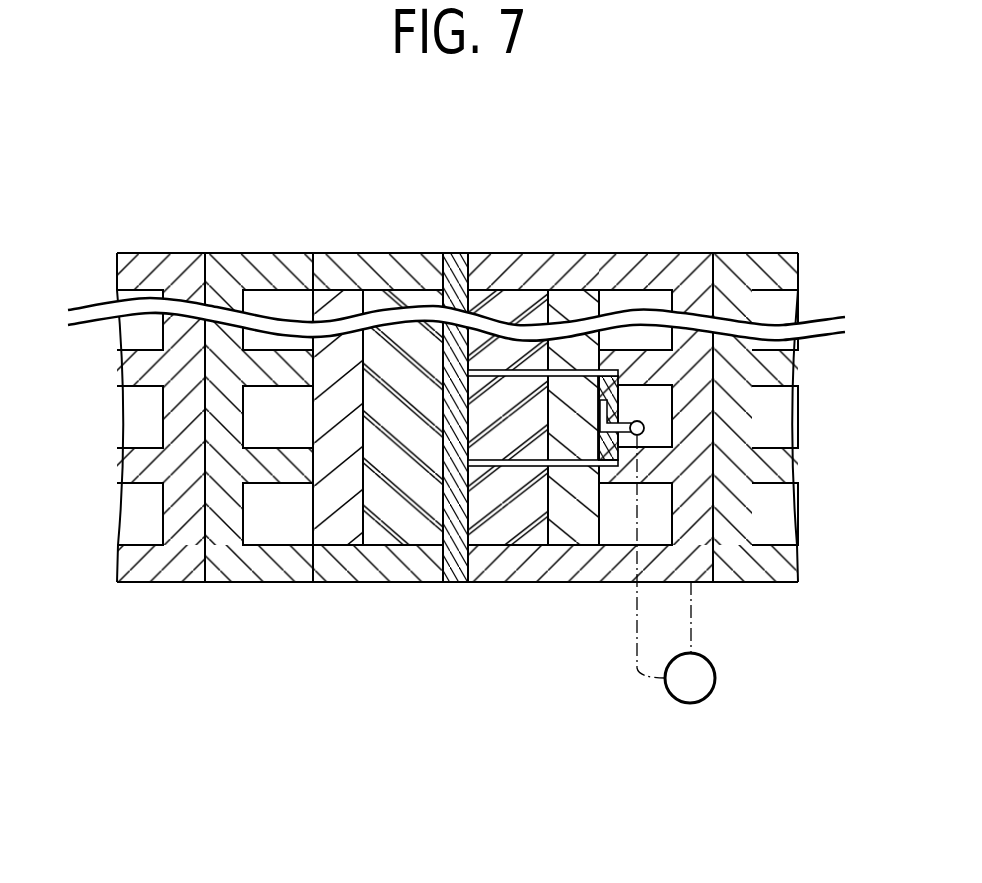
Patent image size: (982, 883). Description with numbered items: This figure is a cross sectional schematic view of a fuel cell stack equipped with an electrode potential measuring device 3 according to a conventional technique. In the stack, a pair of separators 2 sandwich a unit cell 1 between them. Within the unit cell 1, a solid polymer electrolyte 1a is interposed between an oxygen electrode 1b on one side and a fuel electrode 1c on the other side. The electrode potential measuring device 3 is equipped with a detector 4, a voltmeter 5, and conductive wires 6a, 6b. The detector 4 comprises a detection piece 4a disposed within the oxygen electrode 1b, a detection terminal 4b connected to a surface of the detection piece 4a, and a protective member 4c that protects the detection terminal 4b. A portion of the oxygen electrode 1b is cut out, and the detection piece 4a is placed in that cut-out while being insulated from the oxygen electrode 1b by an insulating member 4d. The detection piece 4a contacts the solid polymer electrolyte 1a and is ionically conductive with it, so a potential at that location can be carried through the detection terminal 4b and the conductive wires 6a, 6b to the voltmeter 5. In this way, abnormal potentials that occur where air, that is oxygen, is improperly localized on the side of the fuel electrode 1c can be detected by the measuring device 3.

The unit cell 1 is at (455, 338).
The solid polymer electrolyte 1a is at (453, 253).
The oxygen electrode 1b is at (524, 291).
The fuel electrode 1c is at (390, 287).
The separator 2 is at (240, 240).
The electrode potential measuring device 3 is at (755, 608).
The detector 4 is at (647, 512).
The detection piece 4a is at (486, 450).
The detection terminal 4b is at (605, 412).
The protective member 4c is at (609, 466).
The insulating member 4d is at (528, 466).
The voltmeter 5 is at (690, 703).
The conductive wire 6a is at (637, 676).
The conductive wire 6b is at (691, 618).